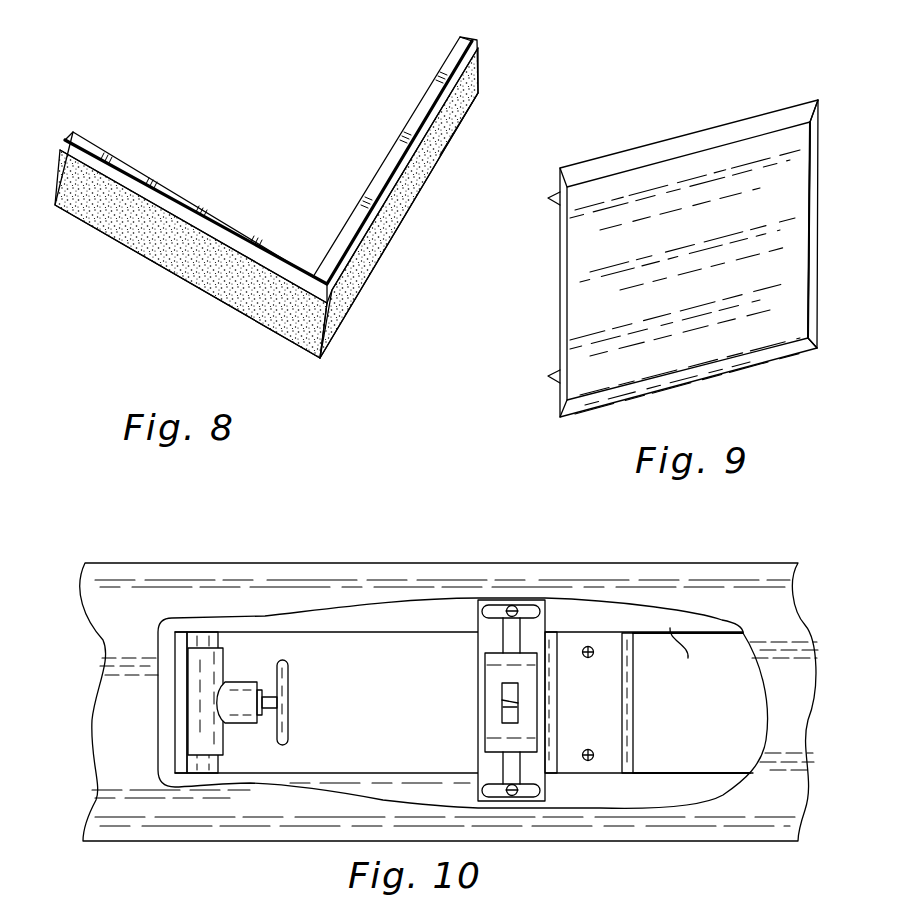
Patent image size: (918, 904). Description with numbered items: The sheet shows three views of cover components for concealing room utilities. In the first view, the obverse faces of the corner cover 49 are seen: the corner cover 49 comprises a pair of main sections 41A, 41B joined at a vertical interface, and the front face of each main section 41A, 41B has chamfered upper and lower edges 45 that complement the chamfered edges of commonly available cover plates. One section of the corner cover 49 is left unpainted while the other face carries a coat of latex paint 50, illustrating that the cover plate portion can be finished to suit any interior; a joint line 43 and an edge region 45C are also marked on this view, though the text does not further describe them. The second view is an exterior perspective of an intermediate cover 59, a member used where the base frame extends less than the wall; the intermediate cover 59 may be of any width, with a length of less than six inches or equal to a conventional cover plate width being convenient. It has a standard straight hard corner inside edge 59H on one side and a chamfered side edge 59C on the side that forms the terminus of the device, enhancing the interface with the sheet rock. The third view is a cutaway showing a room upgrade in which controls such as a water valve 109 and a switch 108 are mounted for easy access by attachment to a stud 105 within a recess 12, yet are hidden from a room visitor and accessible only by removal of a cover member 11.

In FIG. 10, the cover member 11 is at (272, 563).
In FIG. 10, the cavity 12 is at (347, 628).
In FIG. 8, the main section 41A is at (382, 250).
In FIG. 8, the main section 41B is at (133, 233).
In FIG. 8, the joint seam 43 is at (341, 243).
In FIG. 8, the chamfered edges 45 is at (73, 131).
In FIG. 9, the edge strip 45C is at (817, 310).
In FIG. 8, the corner cover 49 is at (137, 282).
In FIG. 8, the coat of latex paint 50 is at (442, 141).
In FIG. 9, the intermediate cover 59 is at (686, 135).
In FIG. 9, the chamfered side edge 59C is at (823, 226).
In FIG. 9, the hard corner inside edge 59H is at (558, 342).
In FIG. 10, the stud 105 is at (635, 698).
In FIG. 10, the switch 108 is at (477, 703).
In FIG. 10, the water valve 109 is at (226, 663).